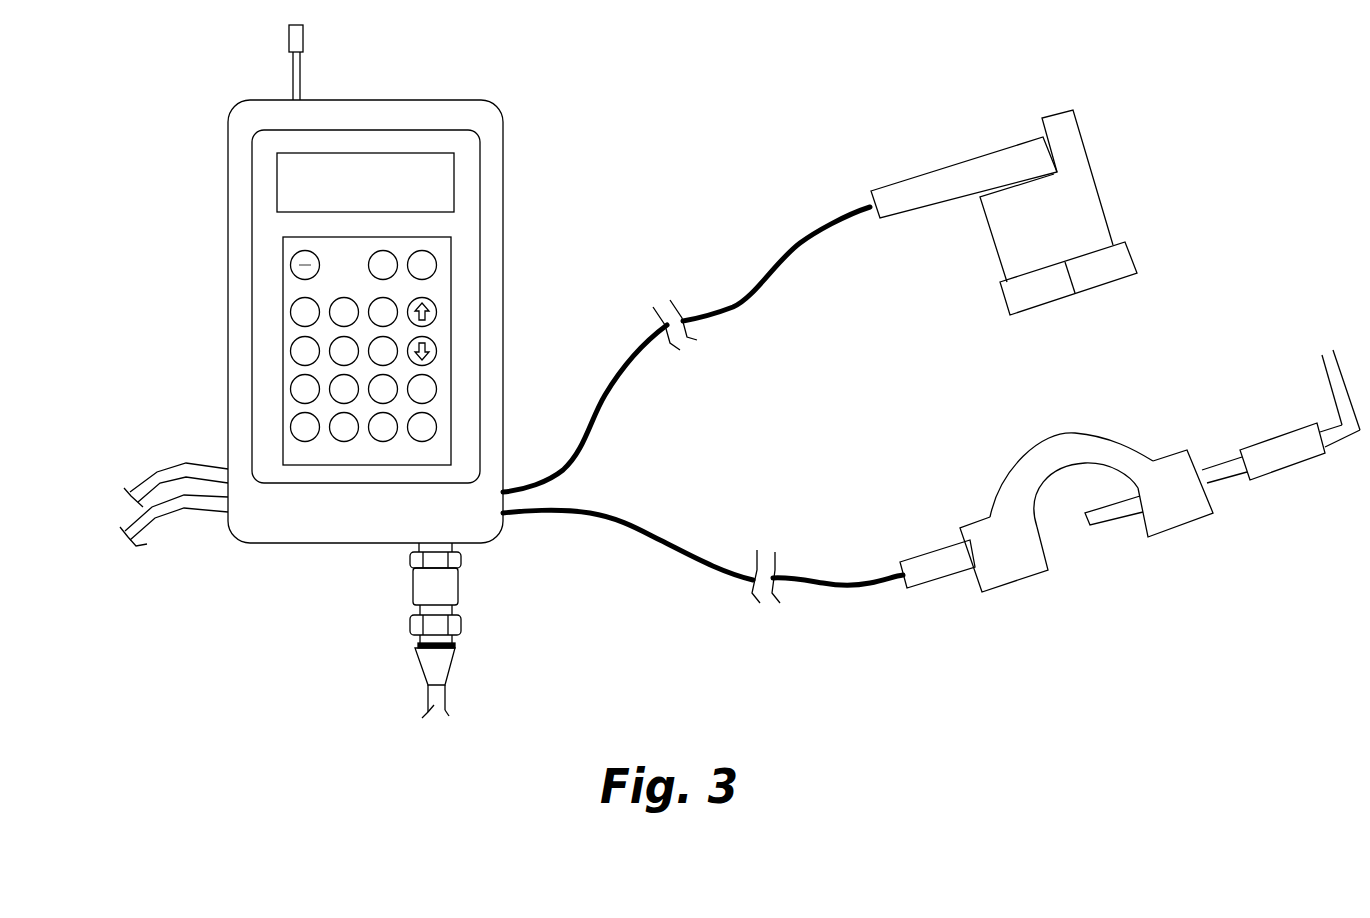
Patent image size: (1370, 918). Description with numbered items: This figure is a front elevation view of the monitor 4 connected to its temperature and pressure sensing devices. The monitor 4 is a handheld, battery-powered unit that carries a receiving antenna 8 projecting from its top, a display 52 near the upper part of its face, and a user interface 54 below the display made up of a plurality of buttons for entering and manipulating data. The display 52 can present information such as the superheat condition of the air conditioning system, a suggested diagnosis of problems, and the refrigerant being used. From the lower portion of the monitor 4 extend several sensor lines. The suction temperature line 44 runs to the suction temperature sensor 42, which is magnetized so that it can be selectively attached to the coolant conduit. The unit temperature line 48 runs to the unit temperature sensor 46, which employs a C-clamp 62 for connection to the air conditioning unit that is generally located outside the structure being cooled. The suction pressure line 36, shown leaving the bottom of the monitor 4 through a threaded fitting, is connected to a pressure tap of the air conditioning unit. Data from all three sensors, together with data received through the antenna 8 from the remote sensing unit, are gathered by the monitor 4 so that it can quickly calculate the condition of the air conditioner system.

The monitor 4 is at (532, 98).
The receiving antenna 8 is at (302, 58).
The display 52 is at (500, 185).
The user interface 54 is at (440, 403).
The suction pressure line 36 is at (443, 700).
The suction temperature line 44 is at (813, 233).
The suction temperature sensor 42 is at (1073, 160).
The unit temperature line 48 is at (830, 590).
The unit temperature sensor 46 is at (1017, 557).
The C-clamp 62 is at (1108, 448).